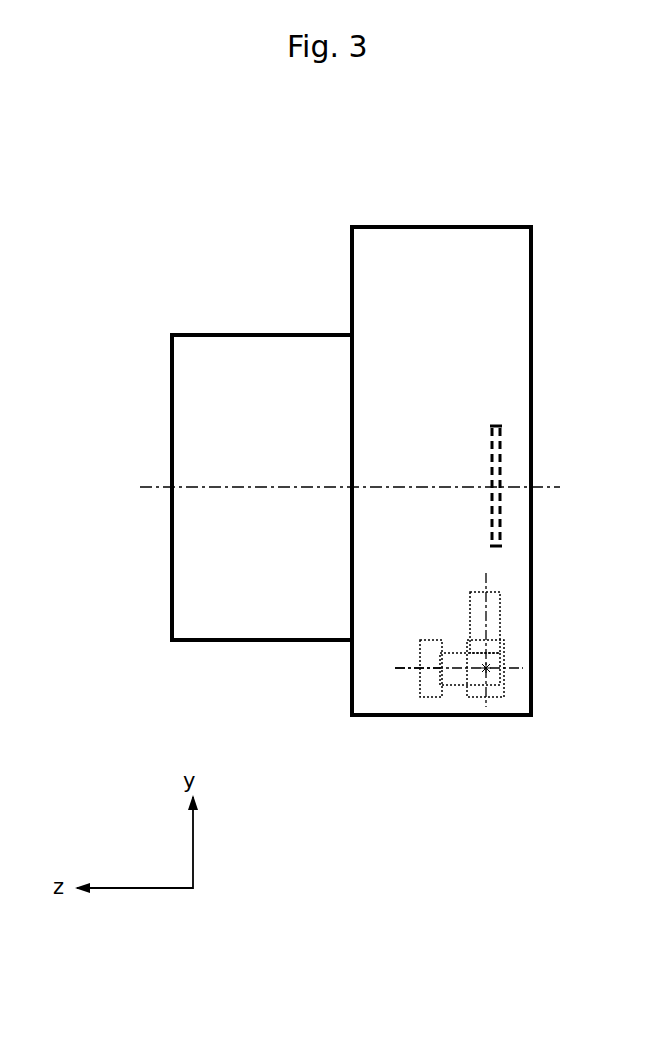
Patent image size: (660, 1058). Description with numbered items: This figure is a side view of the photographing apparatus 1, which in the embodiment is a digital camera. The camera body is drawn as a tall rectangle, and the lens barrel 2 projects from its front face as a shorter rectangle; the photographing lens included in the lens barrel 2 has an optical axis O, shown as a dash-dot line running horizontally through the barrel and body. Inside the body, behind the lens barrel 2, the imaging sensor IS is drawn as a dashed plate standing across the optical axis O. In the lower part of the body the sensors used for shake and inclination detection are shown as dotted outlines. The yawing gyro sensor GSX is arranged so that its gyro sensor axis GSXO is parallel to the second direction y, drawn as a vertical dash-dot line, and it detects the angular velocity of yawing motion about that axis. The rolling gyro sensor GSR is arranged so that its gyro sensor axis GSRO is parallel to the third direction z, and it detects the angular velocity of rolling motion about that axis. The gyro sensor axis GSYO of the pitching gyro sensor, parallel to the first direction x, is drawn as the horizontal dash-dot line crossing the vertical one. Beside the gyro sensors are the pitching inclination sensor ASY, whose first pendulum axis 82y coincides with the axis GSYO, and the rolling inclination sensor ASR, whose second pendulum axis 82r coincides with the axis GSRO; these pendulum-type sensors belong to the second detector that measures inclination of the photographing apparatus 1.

The photographing apparatus 1 is at (531, 227).
The lens barrel 2 is at (237, 335).
The optical axis O is at (150, 487).
The imaging sensor IS is at (495, 427).
The gyro sensor axis GSXO is at (486, 575).
The yawing gyro sensor GSX is at (500, 611).
The pitching inclination sensor ASY is at (504, 648).
The gyro sensor axis GSYO is at (506, 700).
The first pendulum axis 82y is at (487, 670).
The gyro sensor axis GSRO is at (402, 628).
The second pendulum axis 82r is at (405, 668).
The rolling inclination sensor ASR is at (424, 698).
The rolling gyro sensor GSR is at (460, 685).